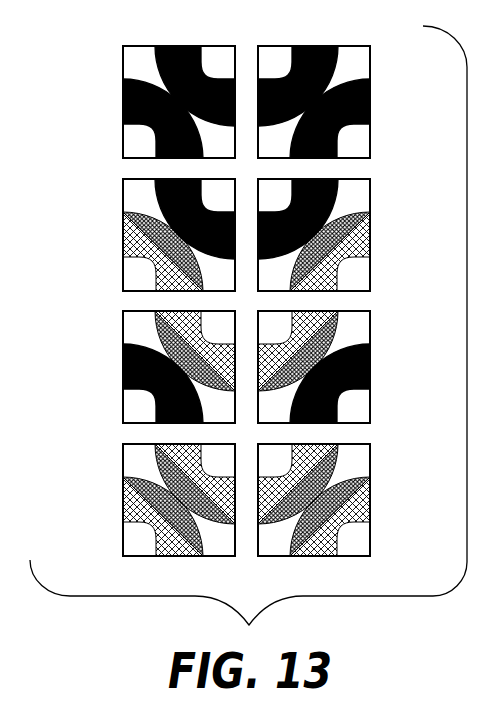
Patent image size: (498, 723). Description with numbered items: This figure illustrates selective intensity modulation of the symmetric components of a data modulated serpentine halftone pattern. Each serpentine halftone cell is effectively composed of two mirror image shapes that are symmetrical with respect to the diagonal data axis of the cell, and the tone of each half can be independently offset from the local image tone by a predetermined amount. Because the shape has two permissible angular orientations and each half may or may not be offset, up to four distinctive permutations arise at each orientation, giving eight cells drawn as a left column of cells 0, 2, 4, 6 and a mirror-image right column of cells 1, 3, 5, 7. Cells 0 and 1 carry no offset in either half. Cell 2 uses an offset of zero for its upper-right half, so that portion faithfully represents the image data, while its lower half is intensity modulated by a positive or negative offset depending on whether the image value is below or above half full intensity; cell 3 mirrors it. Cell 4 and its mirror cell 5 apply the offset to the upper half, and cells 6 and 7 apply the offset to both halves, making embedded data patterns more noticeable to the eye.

The serpentine halftone cell 0 is at (110, 108).
The serpentine halftone cell 1 is at (387, 108).
The serpentine halftone cell 2 is at (110, 241).
The serpentine halftone cell 3 is at (387, 241).
The serpentine halftone cell 4 is at (110, 373).
The serpentine halftone cell 5 is at (387, 373).
The serpentine halftone cell 6 is at (110, 506).
The serpentine halftone cell 7 is at (387, 506).